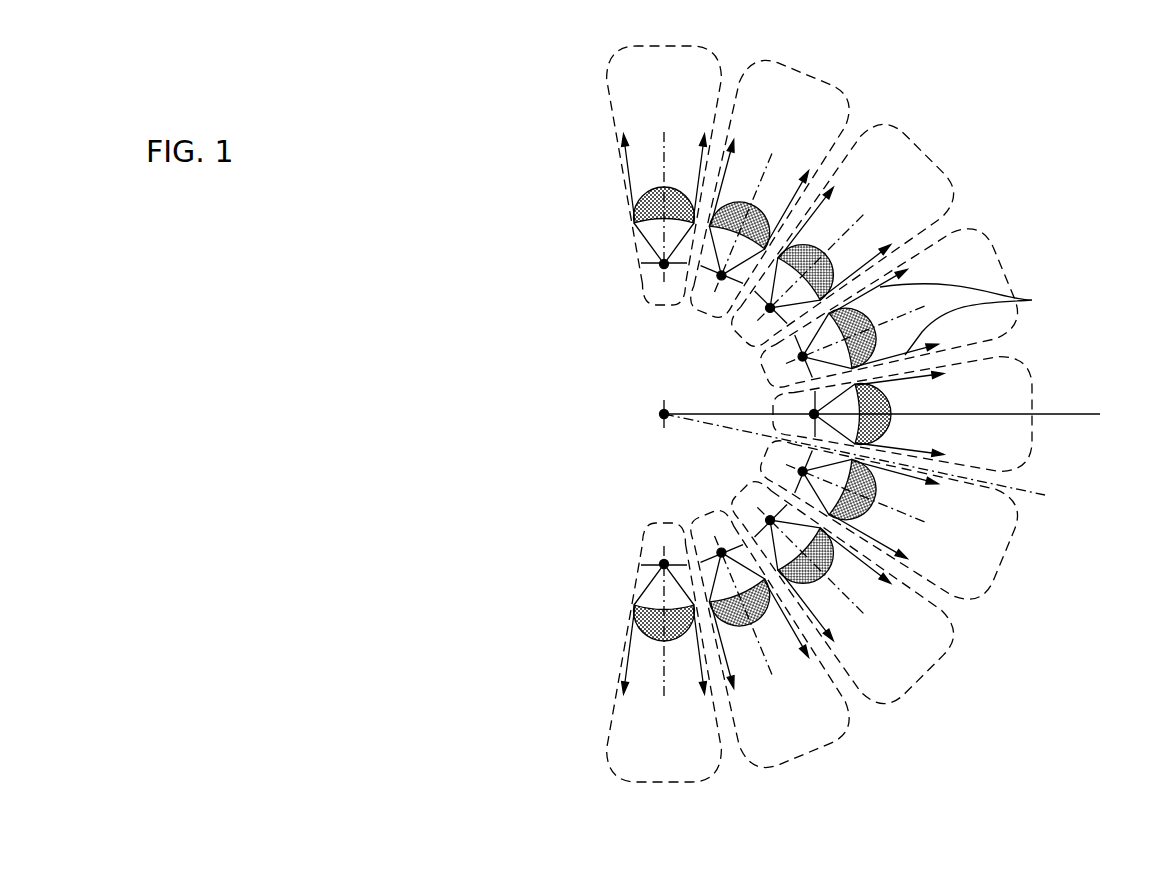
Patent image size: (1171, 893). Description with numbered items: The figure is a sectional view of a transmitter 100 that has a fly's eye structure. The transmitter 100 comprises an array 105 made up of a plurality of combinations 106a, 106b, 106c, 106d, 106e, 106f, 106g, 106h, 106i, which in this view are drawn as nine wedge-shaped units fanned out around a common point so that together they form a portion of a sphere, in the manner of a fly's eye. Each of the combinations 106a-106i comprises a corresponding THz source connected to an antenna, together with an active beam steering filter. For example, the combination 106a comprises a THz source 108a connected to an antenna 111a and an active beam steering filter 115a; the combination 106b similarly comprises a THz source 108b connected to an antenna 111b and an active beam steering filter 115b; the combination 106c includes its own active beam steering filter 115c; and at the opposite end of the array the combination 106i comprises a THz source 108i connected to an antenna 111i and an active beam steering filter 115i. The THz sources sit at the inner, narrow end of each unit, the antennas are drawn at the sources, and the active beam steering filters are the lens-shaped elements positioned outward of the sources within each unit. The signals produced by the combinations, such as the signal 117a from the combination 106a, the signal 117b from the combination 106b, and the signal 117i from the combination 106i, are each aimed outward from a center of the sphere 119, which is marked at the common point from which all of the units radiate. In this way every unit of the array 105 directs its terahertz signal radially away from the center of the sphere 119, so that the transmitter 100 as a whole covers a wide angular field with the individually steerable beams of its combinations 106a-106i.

The transmitter 100 is at (206, 71).
The array 105 is at (700, 325).
The combination 106a is at (661, 46).
The combination 106b is at (802, 68).
The combination 106c is at (921, 152).
The combination 106d is at (1005, 270).
The combination 106e is at (1037, 414).
The combination 106f is at (1008, 552).
The combination 106g is at (928, 673).
The combination 106h is at (813, 753).
The combination 106i is at (670, 783).
The THz source 108a is at (643, 261).
The THz source 108b is at (700, 272).
The THz source 108i is at (661, 561).
The antenna 111a is at (660, 263).
The antenna 111b is at (720, 270).
The antenna 111i is at (643, 566).
The active beam steering filter 115a is at (645, 187).
The active beam steering filter 115b is at (745, 200).
The active beam steering filter 115c is at (828, 247).
The active beam steering filter 115i is at (648, 643).
The signal 117a is at (629, 163).
The signal 117b is at (736, 140).
The signal 117i is at (620, 655).
The center of the sphere 119 is at (664, 414).